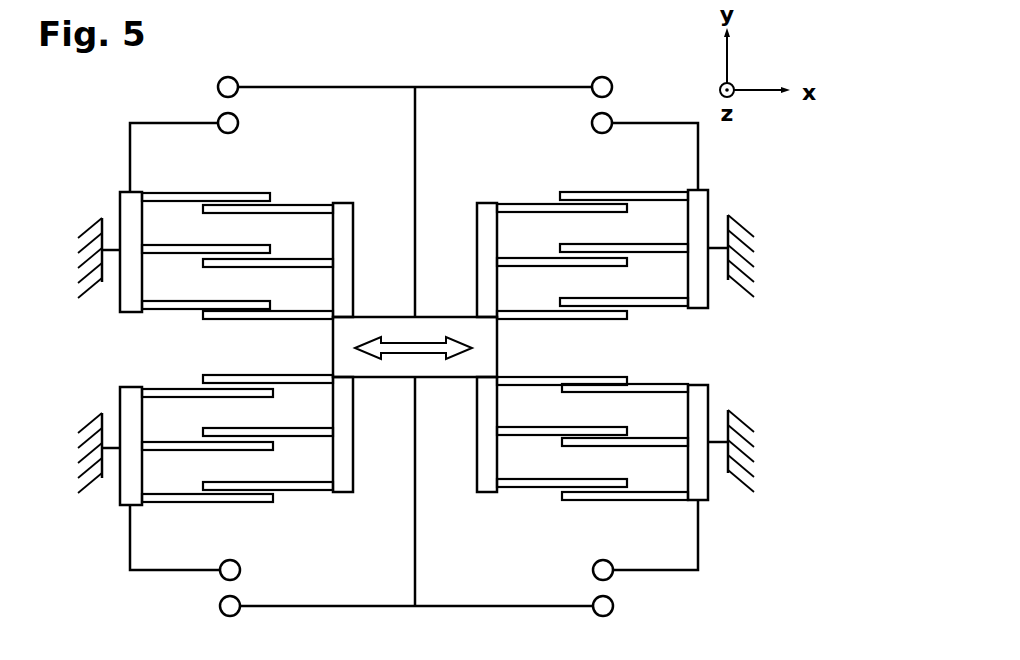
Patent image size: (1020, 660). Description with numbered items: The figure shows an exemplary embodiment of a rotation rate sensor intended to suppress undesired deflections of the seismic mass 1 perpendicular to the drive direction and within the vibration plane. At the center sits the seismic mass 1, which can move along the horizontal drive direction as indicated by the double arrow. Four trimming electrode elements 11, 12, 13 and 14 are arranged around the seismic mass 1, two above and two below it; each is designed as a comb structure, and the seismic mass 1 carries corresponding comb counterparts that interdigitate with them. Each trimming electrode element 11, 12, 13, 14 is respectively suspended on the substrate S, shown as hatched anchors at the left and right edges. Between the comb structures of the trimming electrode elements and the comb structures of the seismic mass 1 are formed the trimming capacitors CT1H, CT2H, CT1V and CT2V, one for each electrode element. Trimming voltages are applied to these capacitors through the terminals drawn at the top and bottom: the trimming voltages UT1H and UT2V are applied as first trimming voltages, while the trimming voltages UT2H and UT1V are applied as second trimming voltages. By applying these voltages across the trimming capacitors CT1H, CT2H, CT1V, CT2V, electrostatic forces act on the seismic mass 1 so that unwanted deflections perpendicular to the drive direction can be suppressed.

The seismic mass 1 is at (453, 378).
The trimming electrode element 11 is at (248, 194).
The trimming electrode element 12 is at (575, 192).
The trimming electrode element 13 is at (244, 503).
The trimming electrode element 14 is at (580, 497).
The substrate S is at (80, 222).
The trimming capacitor CT1H is at (260, 214).
The trimming capacitor CT2H is at (573, 211).
The trimming capacitor CT1V is at (262, 488).
The trimming capacitor CT2V is at (574, 488).
The trimming voltage UT1H is at (272, 134).
The trimming voltage UT2H is at (556, 133).
The trimming voltage UT1V is at (272, 561).
The trimming voltage UT2V is at (556, 559).